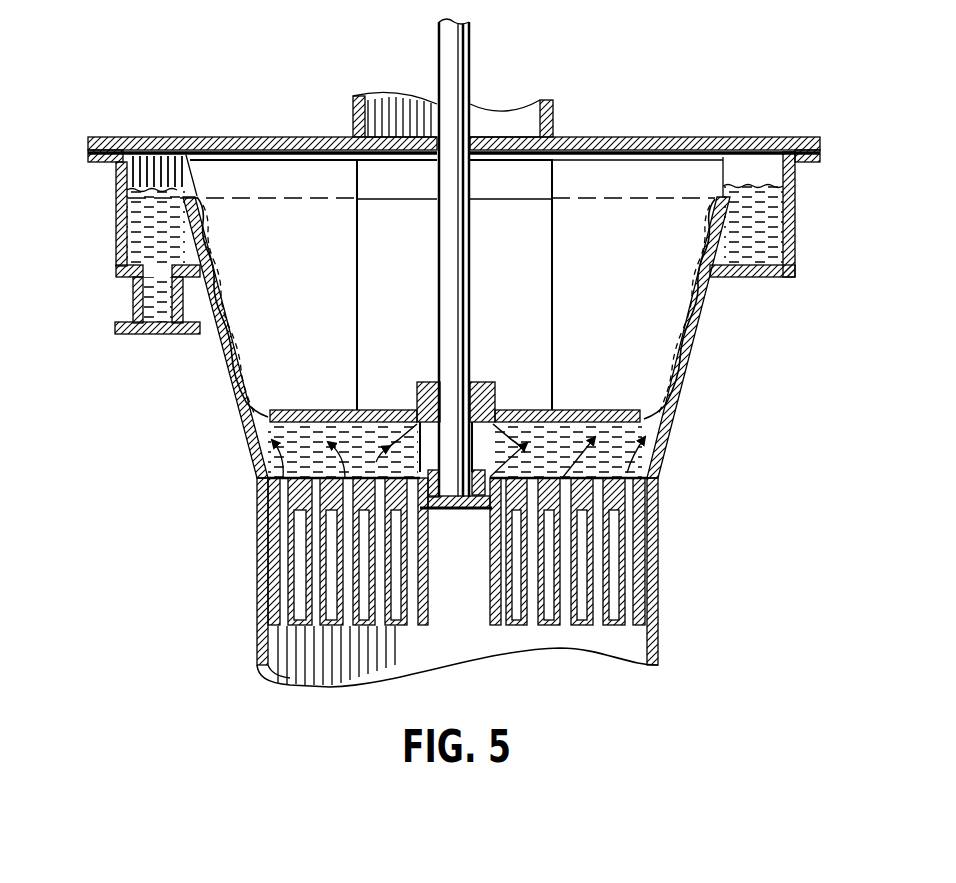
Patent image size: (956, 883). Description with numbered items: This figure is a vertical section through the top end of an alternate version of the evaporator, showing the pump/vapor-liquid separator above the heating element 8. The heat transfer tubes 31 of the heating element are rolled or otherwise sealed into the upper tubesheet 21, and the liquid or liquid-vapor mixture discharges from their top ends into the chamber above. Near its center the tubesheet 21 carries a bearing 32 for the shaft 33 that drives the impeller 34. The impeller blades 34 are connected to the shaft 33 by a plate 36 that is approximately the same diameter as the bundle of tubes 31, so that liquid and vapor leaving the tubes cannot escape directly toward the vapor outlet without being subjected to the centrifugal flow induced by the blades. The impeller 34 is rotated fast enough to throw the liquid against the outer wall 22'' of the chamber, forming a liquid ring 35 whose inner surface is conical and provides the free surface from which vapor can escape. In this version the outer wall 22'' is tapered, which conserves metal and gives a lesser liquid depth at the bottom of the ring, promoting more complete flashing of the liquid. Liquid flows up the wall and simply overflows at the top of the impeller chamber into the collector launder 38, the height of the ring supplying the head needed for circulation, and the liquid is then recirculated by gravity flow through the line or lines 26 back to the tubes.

The heating element 8 is at (257, 573).
The upper tubesheet 21 is at (268, 490).
The tapered outer wall 22'' is at (437, 314).
The recycle line 26 is at (166, 334).
The heat transfer tubes 31 is at (492, 597).
The bearing 32 is at (437, 509).
The shaft 33 is at (466, 60).
The impeller 34 is at (340, 236).
The liquid ring 35 is at (236, 305).
The plate 36 is at (533, 410).
The collector launder 38 is at (795, 218).